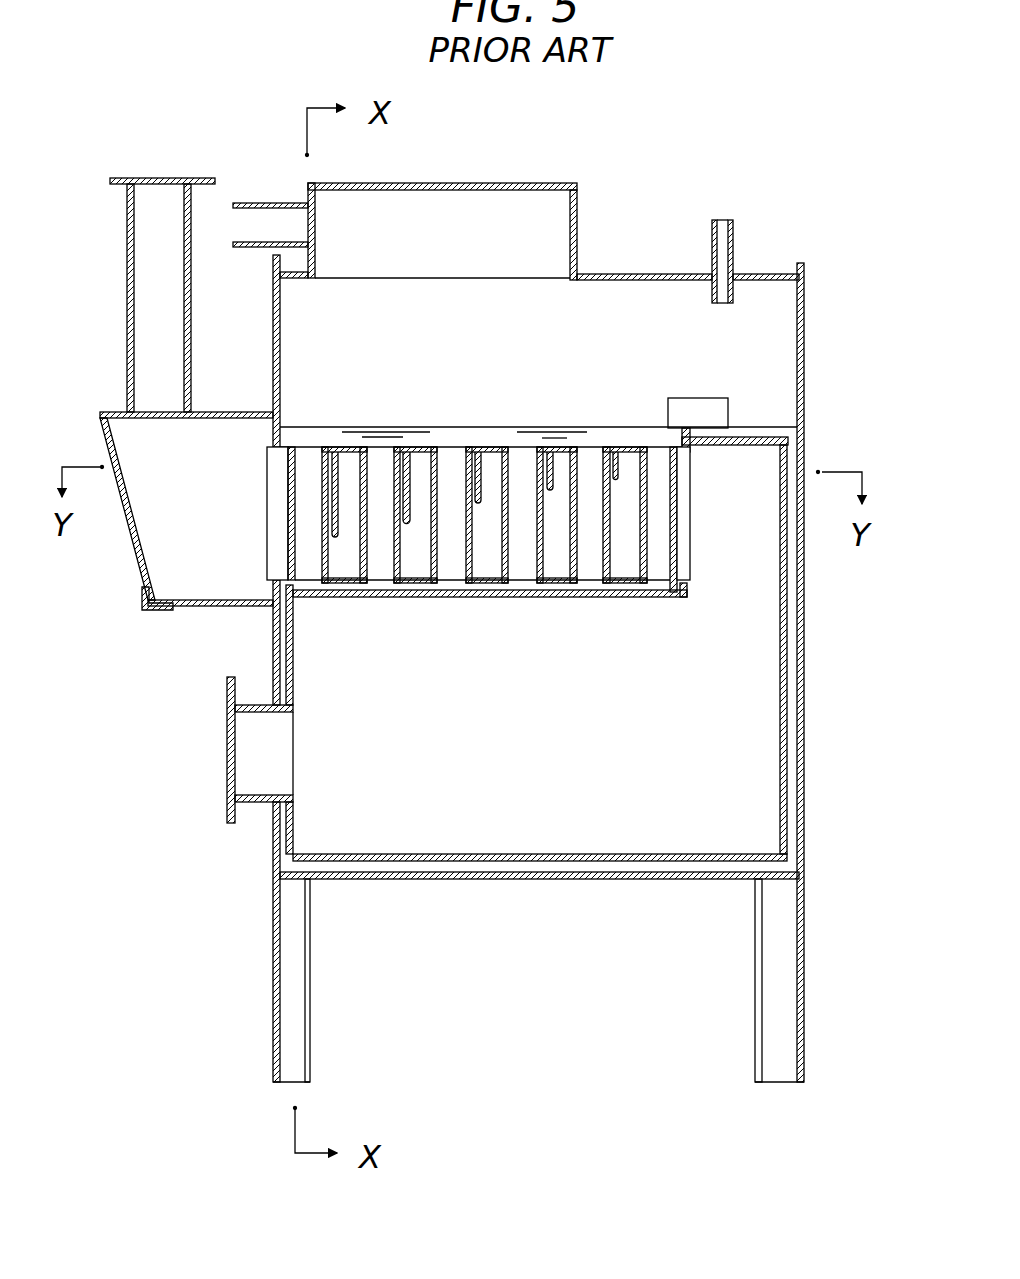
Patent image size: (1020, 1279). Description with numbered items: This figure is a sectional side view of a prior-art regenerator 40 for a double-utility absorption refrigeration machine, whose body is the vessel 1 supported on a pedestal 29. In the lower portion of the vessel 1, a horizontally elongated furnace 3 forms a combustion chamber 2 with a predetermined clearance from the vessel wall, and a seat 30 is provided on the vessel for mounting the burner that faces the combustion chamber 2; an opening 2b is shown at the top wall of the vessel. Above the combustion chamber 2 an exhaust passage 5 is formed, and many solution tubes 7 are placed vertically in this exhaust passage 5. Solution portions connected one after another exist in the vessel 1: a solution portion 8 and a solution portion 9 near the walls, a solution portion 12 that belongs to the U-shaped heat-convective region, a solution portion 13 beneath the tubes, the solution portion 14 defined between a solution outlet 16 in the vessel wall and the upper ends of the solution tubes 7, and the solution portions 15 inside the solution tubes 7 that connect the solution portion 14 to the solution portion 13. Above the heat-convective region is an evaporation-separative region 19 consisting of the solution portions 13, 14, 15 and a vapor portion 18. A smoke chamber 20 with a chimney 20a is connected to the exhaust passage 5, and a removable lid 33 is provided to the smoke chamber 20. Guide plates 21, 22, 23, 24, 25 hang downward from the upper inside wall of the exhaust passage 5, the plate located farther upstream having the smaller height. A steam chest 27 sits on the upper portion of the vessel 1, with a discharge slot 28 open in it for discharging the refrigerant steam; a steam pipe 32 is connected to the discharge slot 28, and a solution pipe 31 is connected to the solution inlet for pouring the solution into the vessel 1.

The vessel 1 is at (581, 879).
The combustion chamber 2 is at (388, 815).
The furnace 3 is at (490, 857).
The pipe opening 2b is at (733, 262).
The exhaust passage 5 is at (563, 463).
The solution tubes 7 is at (677, 505).
The solution portion 8 is at (280, 640).
The solution portion 9 is at (789, 800).
The solution portion 12 is at (690, 860).
The solution portion 13 is at (672, 598).
The solution portion 14 is at (605, 437).
The solution portions 15 is at (683, 598).
The solution outlet 16 is at (718, 415).
The vapor portion 18 is at (465, 307).
The evaporation-separative region 19 is at (527, 307).
The smoke chamber 20 is at (137, 437).
The chimney 20a is at (160, 243).
The guide plate 21 is at (618, 483).
The guide plate 22 is at (553, 493).
The guide plate 23 is at (479, 506).
The guide plate 24 is at (407, 526).
The guide plate 25 is at (335, 540).
The steam chest 27 is at (465, 205).
The discharge slot 28 is at (318, 222).
The pedestal 29 is at (287, 935).
The seat 30 is at (248, 773).
The solution pipe 31 is at (727, 257).
The steam pipe 32 is at (262, 215).
The lid 33 is at (133, 543).
The regenerator 40 is at (804, 410).